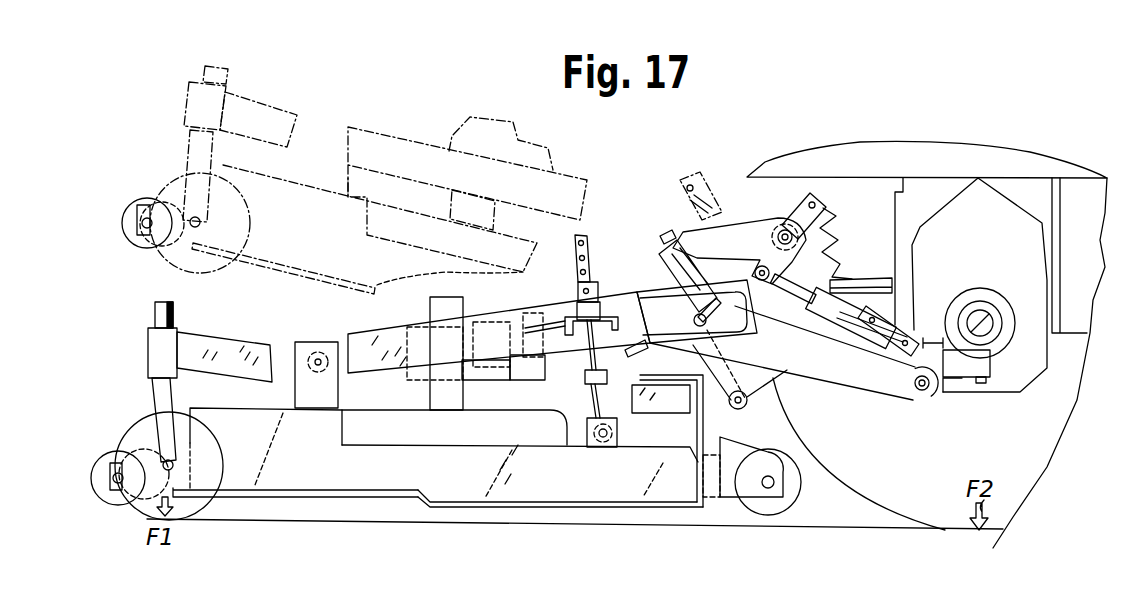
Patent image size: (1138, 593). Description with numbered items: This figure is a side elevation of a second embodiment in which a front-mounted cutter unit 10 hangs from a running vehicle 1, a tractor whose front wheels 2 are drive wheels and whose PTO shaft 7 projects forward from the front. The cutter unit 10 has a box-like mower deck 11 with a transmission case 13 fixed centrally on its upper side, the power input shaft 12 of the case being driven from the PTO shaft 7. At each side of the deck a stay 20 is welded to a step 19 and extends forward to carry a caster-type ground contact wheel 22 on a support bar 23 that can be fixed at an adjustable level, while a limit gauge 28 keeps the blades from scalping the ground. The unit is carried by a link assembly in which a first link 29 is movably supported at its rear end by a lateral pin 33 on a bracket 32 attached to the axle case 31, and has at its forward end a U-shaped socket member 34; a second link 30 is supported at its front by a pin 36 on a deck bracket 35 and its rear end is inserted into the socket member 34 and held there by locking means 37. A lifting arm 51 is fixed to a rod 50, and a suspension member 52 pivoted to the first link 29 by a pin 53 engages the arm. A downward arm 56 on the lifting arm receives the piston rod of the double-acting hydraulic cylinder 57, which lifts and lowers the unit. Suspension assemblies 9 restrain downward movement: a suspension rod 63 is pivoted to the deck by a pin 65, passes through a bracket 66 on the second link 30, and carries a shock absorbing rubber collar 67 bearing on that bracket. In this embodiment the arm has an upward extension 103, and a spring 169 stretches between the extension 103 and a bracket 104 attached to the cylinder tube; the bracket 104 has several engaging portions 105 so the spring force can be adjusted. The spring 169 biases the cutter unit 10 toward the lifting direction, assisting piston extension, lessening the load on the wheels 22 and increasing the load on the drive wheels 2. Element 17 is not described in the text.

The running vehicle 1 is at (962, 136).
The front wheels 2 is at (913, 487).
The PTO shaft 7 is at (896, 248).
The suspension assemblies 9 is at (583, 400).
The cutter unit 10 is at (316, 178).
The mower deck 11 is at (587, 493).
The power input shaft 12 is at (541, 357).
The transmission case 13 is at (493, 356).
The frame plate 17 is at (420, 436).
The step 19 is at (666, 371).
The stay 20 is at (233, 353).
The ground contact wheel 22 is at (146, 427).
The support bar 23 is at (160, 319).
The limit gauge 28 is at (112, 489).
The first link 29 is at (850, 387).
The second link 30 is at (396, 340).
The axle case 31 is at (1002, 338).
The bracket 32 is at (950, 384).
The lateral pin 33 is at (920, 391).
The socket member 34 is at (674, 287).
The bracket 35 is at (304, 344).
The pin 36 is at (318, 353).
The locking means 37 is at (690, 315).
The rod 50 is at (782, 228).
The lifting arm 51 is at (738, 238).
The suspension member 52 is at (668, 237).
The pin 53 is at (738, 410).
The downward arm 56 is at (786, 268).
The hydraulic cylinder 57 is at (818, 337).
The suspension rod 63 is at (586, 259).
The pin 65 is at (604, 442).
The bracket 66 is at (574, 338).
The shock absorbing rubber collar 67 is at (588, 312).
The upward extension 103 is at (800, 208).
The bracket 104 is at (878, 328).
The engaging portions 105 is at (909, 326).
The spring 169 is at (857, 280).